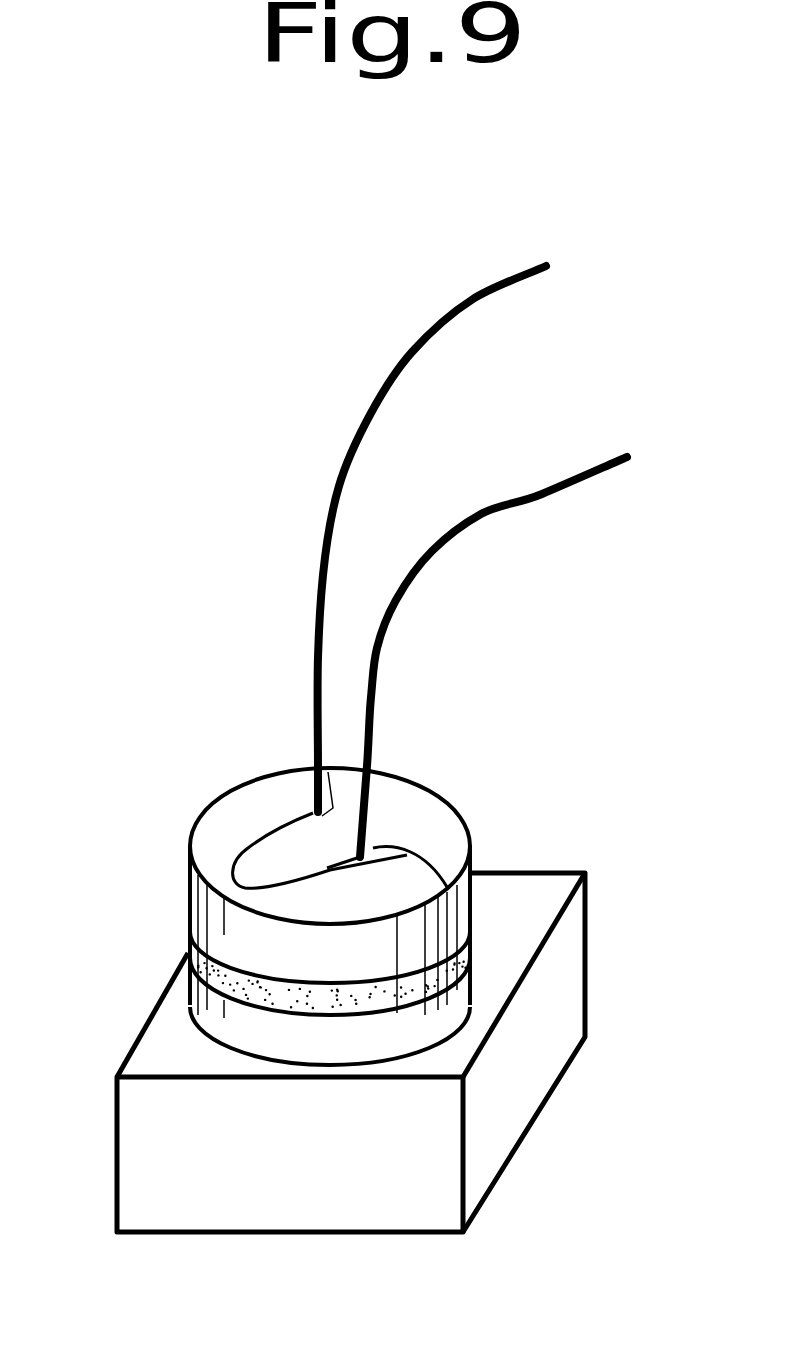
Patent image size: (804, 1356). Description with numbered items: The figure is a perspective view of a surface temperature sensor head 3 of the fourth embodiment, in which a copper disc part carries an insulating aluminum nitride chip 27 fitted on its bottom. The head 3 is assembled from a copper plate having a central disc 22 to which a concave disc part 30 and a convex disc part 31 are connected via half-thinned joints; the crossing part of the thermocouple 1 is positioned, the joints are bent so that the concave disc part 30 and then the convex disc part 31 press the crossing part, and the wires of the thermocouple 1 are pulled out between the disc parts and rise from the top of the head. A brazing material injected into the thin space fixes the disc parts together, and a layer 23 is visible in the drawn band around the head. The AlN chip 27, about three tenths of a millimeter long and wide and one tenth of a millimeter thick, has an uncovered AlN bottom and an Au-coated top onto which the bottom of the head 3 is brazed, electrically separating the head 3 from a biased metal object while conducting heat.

The thermocouple 1 is at (405, 376).
The head 3 is at (148, 820).
The central disc 22 is at (178, 977).
The holding member 23 is at (193, 938).
The insulating AlN chip 27 is at (345, 1180).
The concave disc part 30 is at (268, 797).
The convex disc part 31 is at (407, 808).